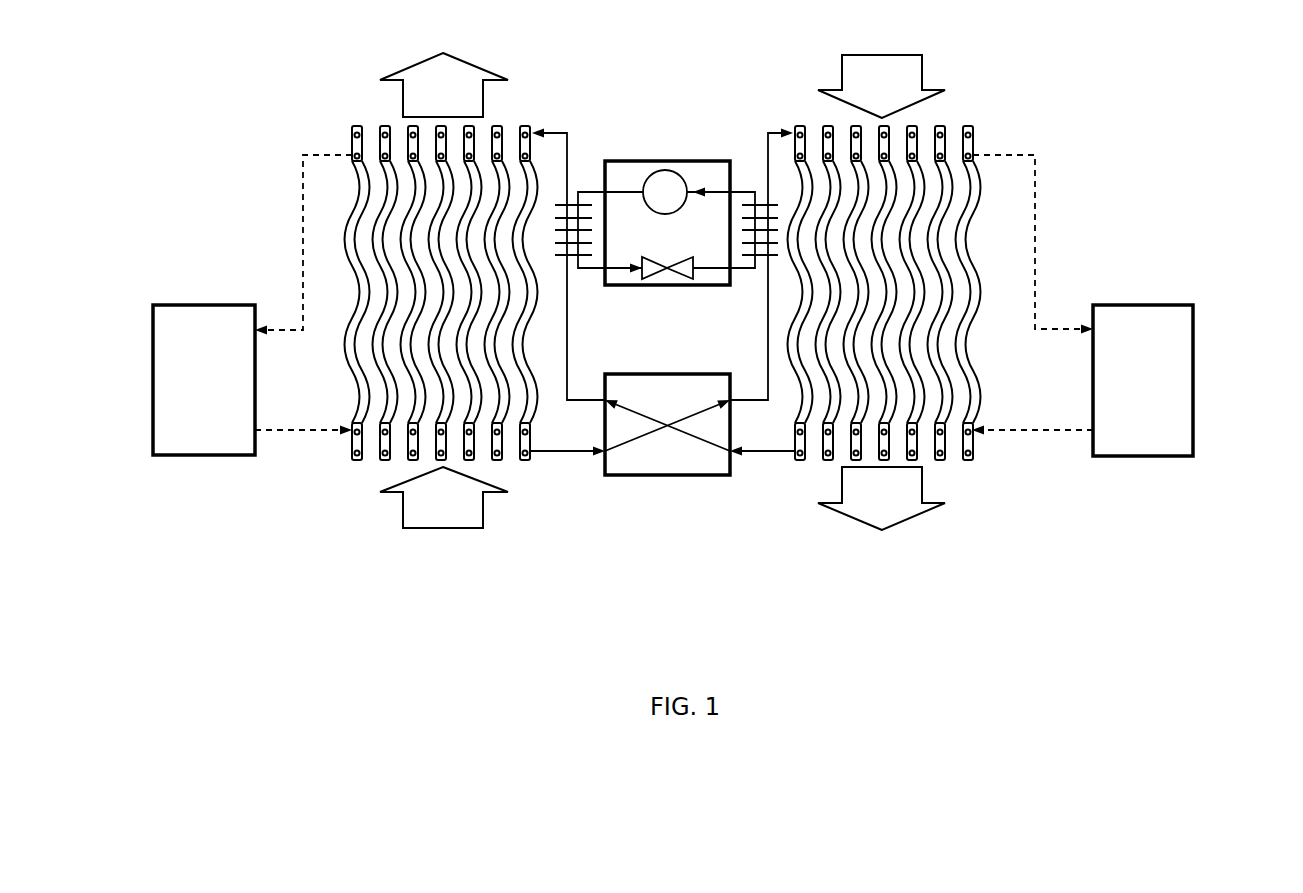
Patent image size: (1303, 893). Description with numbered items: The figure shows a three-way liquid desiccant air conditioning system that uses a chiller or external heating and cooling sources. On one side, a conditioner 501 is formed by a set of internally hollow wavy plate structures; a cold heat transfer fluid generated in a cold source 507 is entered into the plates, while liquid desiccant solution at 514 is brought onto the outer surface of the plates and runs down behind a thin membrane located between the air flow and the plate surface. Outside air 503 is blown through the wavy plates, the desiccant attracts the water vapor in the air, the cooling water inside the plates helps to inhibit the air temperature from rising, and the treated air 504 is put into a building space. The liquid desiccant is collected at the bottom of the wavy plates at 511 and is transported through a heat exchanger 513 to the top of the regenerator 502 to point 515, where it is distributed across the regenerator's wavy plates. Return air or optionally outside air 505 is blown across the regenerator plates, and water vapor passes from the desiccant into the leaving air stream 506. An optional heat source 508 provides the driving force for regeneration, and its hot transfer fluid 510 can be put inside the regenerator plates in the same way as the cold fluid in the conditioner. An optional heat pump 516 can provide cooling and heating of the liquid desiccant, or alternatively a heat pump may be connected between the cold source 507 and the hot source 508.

The conditioner 501 is at (972, 467).
The regenerator 502 is at (353, 468).
The outside air 503 is at (896, 72).
The treated air 504 is at (881, 514).
The return air or outside air 505 is at (444, 514).
The leaving air stream 506 is at (429, 79).
The cold source 507 is at (1185, 297).
The heat source 508 is at (150, 303).
The hot transfer fluid 510 is at (297, 447).
The liquid desiccant collection point 511 is at (759, 467).
The heat exchanger 513 is at (685, 483).
The liquid desiccant solution inlet 514 is at (772, 117).
The liquid desiccant distribution point 515 is at (573, 117).
The heat pump 516 is at (658, 142).